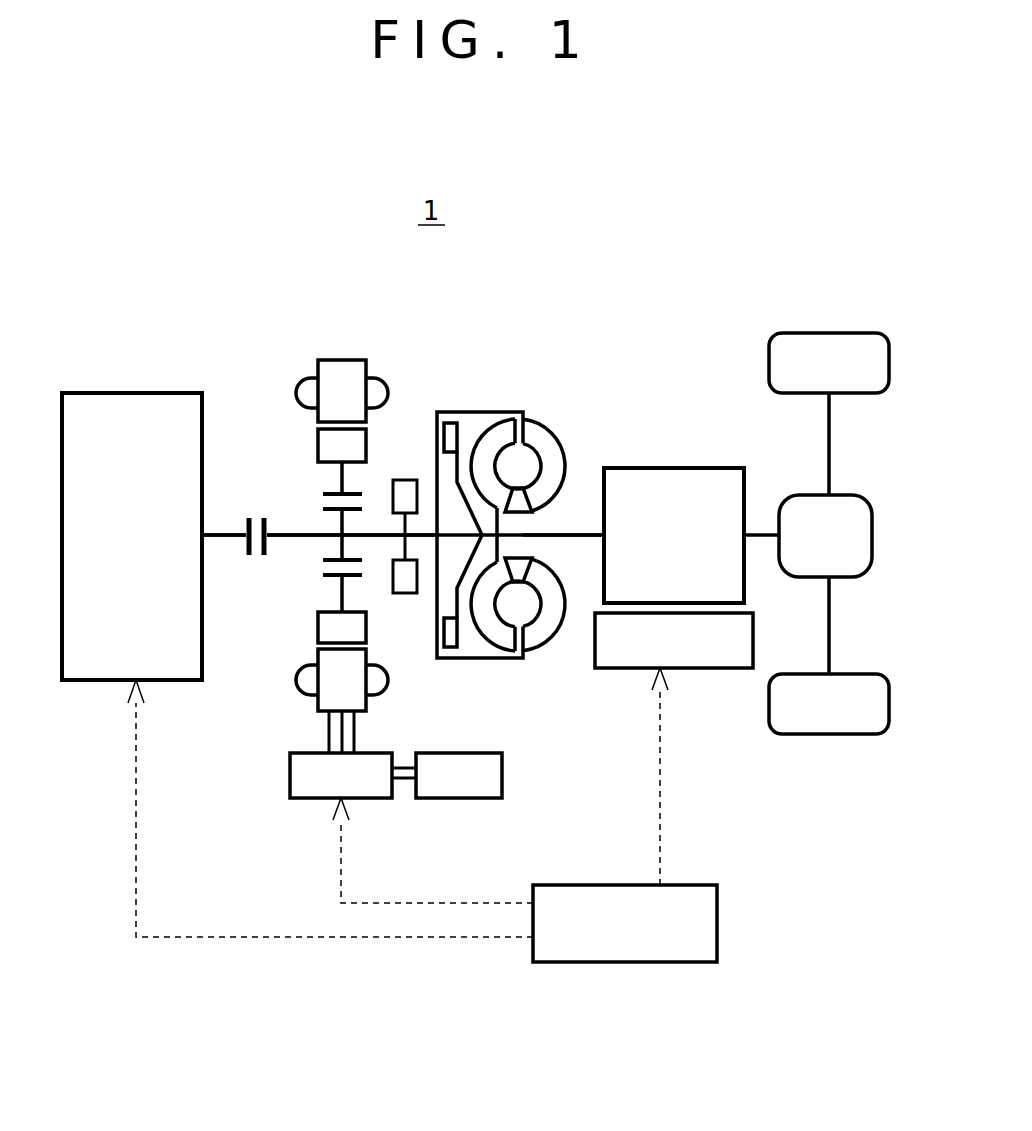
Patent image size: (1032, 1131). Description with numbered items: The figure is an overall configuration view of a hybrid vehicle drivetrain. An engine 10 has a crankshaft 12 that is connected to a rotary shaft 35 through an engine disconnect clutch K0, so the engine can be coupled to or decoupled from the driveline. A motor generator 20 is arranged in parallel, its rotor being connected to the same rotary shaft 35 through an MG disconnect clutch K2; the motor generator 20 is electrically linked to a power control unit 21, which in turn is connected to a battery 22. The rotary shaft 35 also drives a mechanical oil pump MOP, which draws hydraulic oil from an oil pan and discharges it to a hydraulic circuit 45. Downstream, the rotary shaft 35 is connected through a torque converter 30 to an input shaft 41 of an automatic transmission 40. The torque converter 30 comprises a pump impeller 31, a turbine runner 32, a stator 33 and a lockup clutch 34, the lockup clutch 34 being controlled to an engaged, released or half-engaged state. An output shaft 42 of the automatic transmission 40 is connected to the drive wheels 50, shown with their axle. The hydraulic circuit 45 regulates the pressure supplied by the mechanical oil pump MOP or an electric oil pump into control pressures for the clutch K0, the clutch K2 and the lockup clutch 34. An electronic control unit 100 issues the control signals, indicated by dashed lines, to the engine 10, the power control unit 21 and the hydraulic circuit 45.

The engine 10 is at (131, 392).
The crankshaft 12 is at (227, 533).
The engine disconnect clutch K0 is at (255, 558).
The rotary shaft 35 is at (290, 533).
The motor generator 20 is at (341, 343).
The MG disconnect clutch K2 is at (323, 568).
The mechanical oil pump MOP is at (405, 478).
The torque converter 30 is at (511, 511).
The pump impeller 31 is at (541, 628).
The turbine runner 32 is at (498, 633).
The stator 33 is at (521, 558).
The lockup clutch 34 is at (461, 634).
The input shaft 41 is at (588, 533).
The automatic transmission 40 is at (685, 467).
The output shaft 42 is at (765, 533).
The drive wheels 50 is at (831, 333).
The hydraulic circuit 45 is at (708, 670).
The power control unit 21 is at (303, 800).
The battery 22 is at (458, 800).
The electronic control unit 100 is at (670, 885).